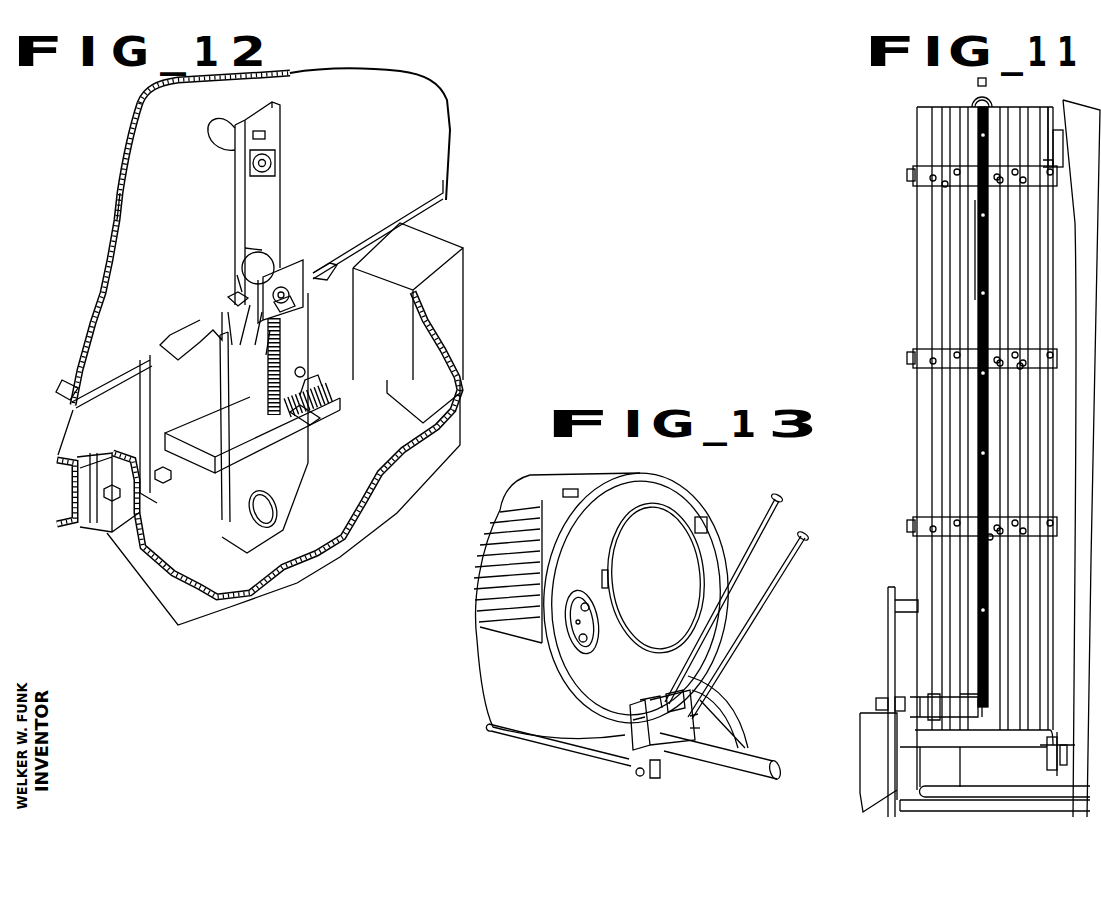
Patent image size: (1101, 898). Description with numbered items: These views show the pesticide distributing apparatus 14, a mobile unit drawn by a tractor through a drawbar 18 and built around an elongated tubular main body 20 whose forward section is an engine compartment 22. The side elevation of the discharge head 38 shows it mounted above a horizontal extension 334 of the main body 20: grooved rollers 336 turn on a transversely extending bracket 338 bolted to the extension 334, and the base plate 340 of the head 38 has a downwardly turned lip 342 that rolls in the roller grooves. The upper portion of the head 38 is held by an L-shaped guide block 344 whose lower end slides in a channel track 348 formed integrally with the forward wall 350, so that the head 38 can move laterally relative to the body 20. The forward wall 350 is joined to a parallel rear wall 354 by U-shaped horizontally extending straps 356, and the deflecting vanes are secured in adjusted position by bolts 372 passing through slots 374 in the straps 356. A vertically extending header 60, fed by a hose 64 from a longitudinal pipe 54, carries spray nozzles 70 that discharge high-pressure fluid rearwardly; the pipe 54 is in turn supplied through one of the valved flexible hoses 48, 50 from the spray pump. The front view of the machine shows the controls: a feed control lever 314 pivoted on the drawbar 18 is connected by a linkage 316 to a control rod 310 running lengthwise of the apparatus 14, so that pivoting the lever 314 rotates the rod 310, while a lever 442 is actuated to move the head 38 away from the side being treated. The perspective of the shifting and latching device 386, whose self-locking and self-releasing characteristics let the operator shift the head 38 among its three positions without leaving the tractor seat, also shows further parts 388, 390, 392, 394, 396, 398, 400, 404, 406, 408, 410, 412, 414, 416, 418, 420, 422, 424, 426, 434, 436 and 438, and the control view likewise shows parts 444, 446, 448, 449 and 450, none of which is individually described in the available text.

In FIG. 13, the pesticide distributing apparatus 14 is at (702, 492).
In FIG. 13, the drawbar 18 is at (733, 760).
In FIG. 13, the main body 20 is at (579, 590).
In FIG. 13, the engine compartment 22 is at (473, 620).
In FIG. 11, the discharge head 38 is at (938, 425).
In FIG. 13, the flexible hose 48 is at (617, 737).
In FIG. 13, the flexible hose 50 is at (746, 742).
In FIG. 13, the longitudinally extending pipe 54 is at (550, 746).
In FIG. 11, the longitudinally extending pipe 54 is at (1042, 798).
In FIG. 11, the vertically extending header 60 is at (978, 252).
In FIG. 11, the hose 64 is at (912, 714).
In FIG. 11, the spray nozzles 70 is at (978, 387).
In FIG. 13, the control rod 310 is at (655, 778).
In FIG. 13, the feed control lever 314 is at (765, 518).
In FIG. 13, the linkage 316 is at (636, 775).
In FIG. 12, the horizontal extension 334 is at (417, 237).
In FIG. 11, the horizontal extension 334 is at (973, 760).
In FIG. 11, the grooved rollers 336 is at (1048, 750).
In FIG. 11, the transversely extending bracket 338 is at (1062, 770).
In FIG. 12, the plate 340 is at (70, 390).
In FIG. 11, the plate 340 is at (950, 733).
In FIG. 11, the downwardly turned lip 342 is at (1048, 737).
In FIG. 11, the L-shaped guide block 344 is at (1073, 130).
In FIG. 11, the channel track 348 is at (995, 150).
In FIG. 11, the forward wall 350 is at (1049, 170).
In FIG. 12, the rear wall 354 is at (132, 242).
In FIG. 11, the rear wall 354 is at (917, 277).
In FIG. 11, the U-shaped straps 356 is at (925, 172).
In FIG. 11, the bolts 372 is at (930, 180).
In FIG. 11, the slots 374 is at (940, 188).
In FIG. 12, the shifting and latching device 386 is at (280, 203).
In FIG. 11, the shifting and latching device 386 is at (868, 702).
In FIG. 12, the flange 388 is at (162, 382).
In FIG. 12, the flange 390 is at (136, 450).
In FIG. 12, the rod 392 is at (270, 500).
In FIG. 11, the rod 392 is at (960, 811).
In FIG. 12, the arm 394 is at (178, 345).
In FIG. 12, the pin 396 is at (232, 300).
In FIG. 12, the slot 398 is at (340, 266).
In FIG. 12, the plate 400 is at (262, 197).
In FIG. 11, the plate 400 is at (892, 666).
In FIG. 12, the pin 404 is at (258, 166).
In FIG. 11, the pin 404 is at (890, 607).
In FIG. 12, the clip 406 is at (262, 137).
In FIG. 12, the plate 408 is at (231, 423).
In FIG. 11, the plate 408 is at (876, 802).
In FIG. 12, the arm 410 is at (222, 335).
In FIG. 12, the pin 412 is at (310, 277).
In FIG. 12, the arm 414 is at (235, 322).
In FIG. 12, the bolt 416 is at (300, 297).
In FIG. 11, the bolt 416 is at (878, 704).
In FIG. 12, the pin 418 is at (260, 248).
In FIG. 12, the roller 420 is at (260, 275).
In FIG. 12, the washer 422 is at (238, 283).
In FIG. 12, the spring 424 is at (282, 330).
In FIG. 12, the lever 426 is at (268, 358).
In FIG. 12, the clip 434 is at (302, 430).
In FIG. 12, the spring 436 is at (318, 378).
In FIG. 12, the frame 438 is at (205, 425).
In FIG. 13, the lever 442 is at (768, 592).
In FIG. 13, the bracket 444 is at (670, 716).
In FIG. 13, the pin 446 is at (698, 722).
In FIG. 13, the switch 448 is at (593, 628).
In FIG. 13, the arm 449 is at (645, 706).
In FIG. 13, the pin 450 is at (695, 731).